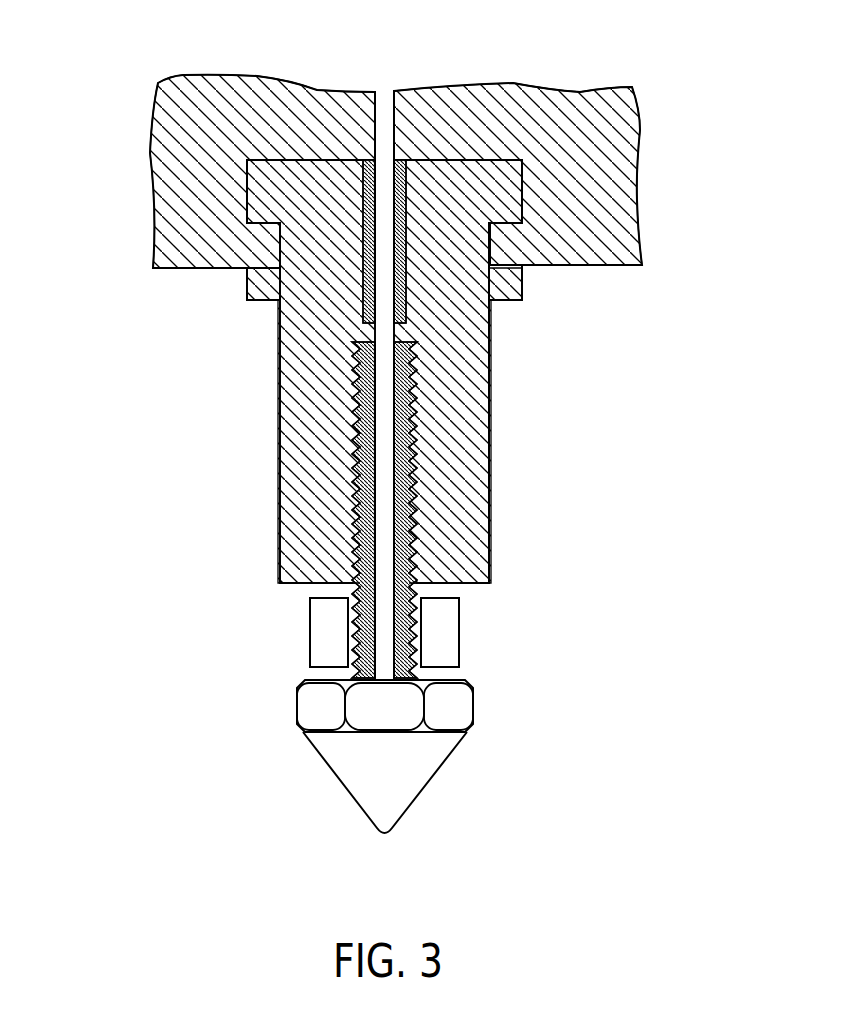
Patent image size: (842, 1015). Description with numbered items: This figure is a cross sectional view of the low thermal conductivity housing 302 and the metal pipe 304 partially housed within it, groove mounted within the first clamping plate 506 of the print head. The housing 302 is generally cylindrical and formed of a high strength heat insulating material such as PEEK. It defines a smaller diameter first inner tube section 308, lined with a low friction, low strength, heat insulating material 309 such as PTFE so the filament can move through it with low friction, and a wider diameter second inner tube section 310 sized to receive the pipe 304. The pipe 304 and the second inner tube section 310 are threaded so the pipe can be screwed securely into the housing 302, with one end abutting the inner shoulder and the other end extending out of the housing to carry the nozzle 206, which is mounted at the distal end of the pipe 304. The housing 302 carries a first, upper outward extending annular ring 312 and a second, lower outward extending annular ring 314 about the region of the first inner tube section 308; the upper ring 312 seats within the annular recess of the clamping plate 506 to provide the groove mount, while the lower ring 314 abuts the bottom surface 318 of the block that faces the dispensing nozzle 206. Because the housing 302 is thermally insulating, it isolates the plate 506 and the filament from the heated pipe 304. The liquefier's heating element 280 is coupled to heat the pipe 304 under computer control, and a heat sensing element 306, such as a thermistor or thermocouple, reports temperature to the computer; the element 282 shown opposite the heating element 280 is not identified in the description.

The nozzle 206 is at (338, 775).
The heating element 280 is at (308, 625).
The right spacer 282 is at (460, 623).
The low thermal conductivity housing 302 is at (490, 433).
The metal pipe 304 is at (417, 590).
The heat sensing element 306 is at (384, 160).
The first inner tube section 308 is at (357, 345).
The low friction, low strength, heat insulating material 309 is at (362, 275).
The second inner tube section 310 is at (417, 508).
The first outward extending annular ring 312 is at (523, 192).
The second outward extending annular ring 314 is at (523, 282).
The bottom surface 318 is at (162, 270).
The first clamping plate 506 is at (637, 128).